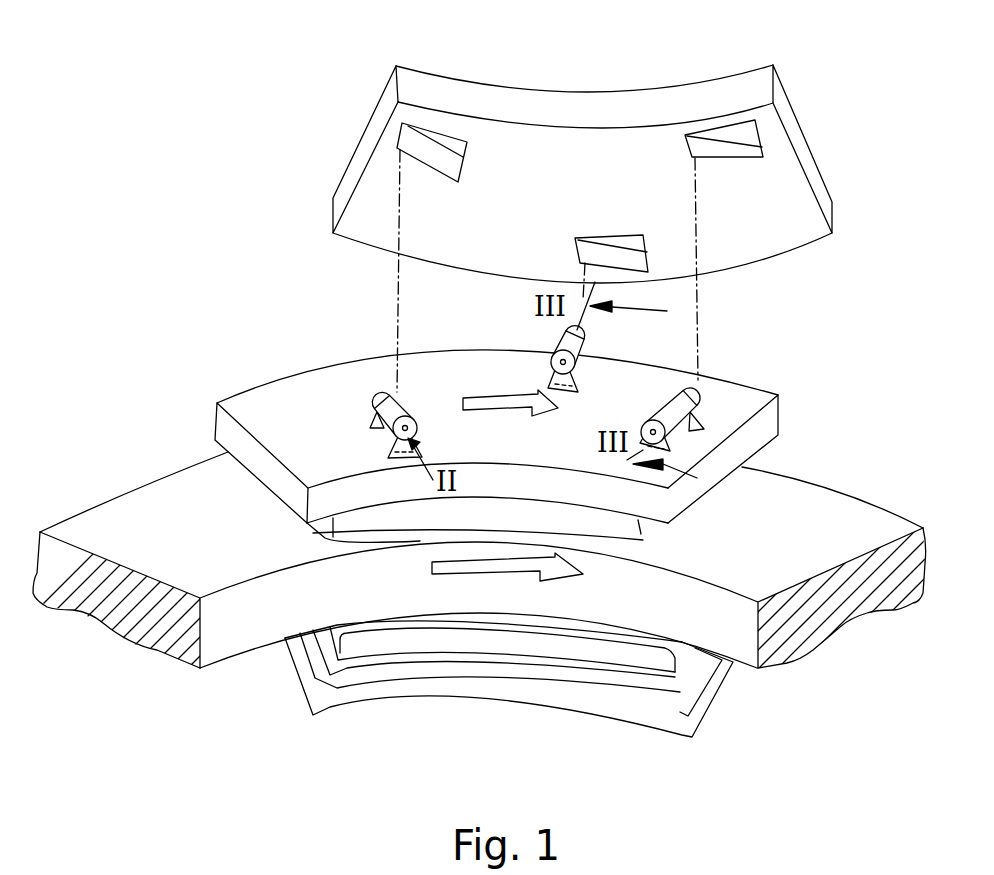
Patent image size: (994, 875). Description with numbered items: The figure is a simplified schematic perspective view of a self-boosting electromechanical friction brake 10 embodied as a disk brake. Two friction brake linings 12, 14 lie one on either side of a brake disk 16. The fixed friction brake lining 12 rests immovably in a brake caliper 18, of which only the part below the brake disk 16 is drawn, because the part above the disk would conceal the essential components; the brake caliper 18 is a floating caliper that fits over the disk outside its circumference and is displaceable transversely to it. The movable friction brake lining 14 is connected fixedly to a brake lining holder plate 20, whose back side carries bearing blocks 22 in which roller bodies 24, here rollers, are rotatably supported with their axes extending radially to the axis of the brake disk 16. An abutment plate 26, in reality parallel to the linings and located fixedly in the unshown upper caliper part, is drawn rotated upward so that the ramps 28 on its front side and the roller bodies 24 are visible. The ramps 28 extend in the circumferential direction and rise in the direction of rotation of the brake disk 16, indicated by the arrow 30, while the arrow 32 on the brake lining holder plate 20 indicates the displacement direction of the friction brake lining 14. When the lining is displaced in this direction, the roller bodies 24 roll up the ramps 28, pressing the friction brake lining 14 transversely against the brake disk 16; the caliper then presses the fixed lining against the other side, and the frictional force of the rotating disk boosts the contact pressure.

The self-boosting electromechanical friction brake 10 is at (256, 250).
The fixed friction brake lining 12 is at (503, 637).
The movable friction brake lining 14 is at (313, 533).
The brake disk 16 is at (862, 512).
The brake caliper 18 is at (588, 695).
The brake lining holder plate 20 is at (260, 408).
The bearing blocks 22 is at (395, 448).
The roller bodies 24 is at (387, 395).
The abutment plate 26 is at (588, 183).
The ramps 28 is at (442, 163).
The arrow (direction of rotation of the brake disk) 30 is at (452, 568).
The arrow (displacement direction of the friction brake lining) 32 is at (500, 403).